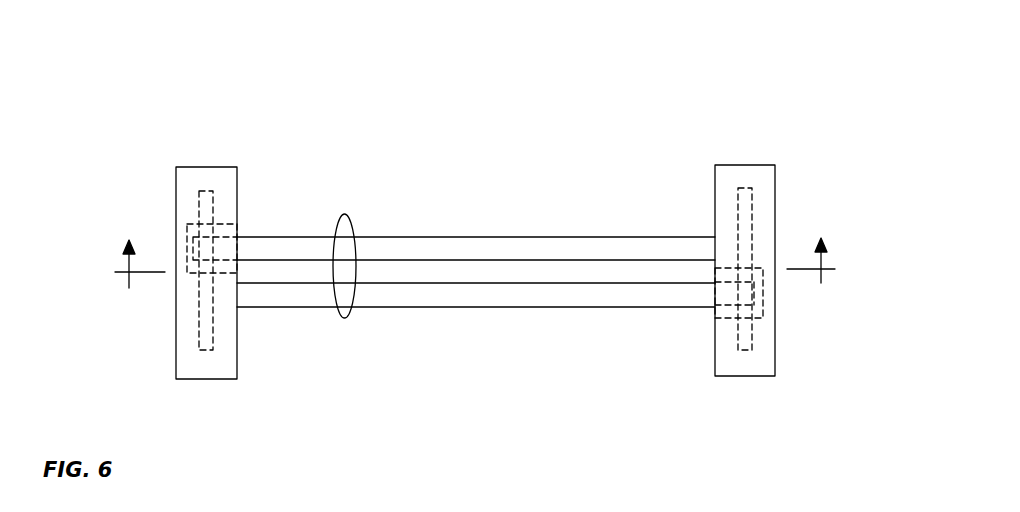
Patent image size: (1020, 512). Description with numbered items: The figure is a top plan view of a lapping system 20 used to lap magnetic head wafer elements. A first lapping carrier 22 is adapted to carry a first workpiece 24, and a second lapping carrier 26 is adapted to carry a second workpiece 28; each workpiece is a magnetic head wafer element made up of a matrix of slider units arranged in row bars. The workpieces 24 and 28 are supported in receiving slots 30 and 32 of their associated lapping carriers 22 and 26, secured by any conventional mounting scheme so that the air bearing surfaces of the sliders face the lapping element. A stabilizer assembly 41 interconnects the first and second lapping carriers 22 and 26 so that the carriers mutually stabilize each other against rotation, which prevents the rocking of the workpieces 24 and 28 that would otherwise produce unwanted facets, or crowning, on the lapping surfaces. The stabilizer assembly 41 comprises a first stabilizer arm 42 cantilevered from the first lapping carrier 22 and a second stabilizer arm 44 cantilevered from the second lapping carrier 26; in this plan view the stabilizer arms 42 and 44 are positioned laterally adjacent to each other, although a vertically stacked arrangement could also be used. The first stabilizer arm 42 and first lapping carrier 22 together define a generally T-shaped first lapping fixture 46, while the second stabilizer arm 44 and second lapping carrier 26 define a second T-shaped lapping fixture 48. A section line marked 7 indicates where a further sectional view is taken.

The lapping system 20 is at (162, 68).
The first lapping carrier 22 is at (177, 207).
The first workpiece 24 is at (208, 318).
The second lapping carrier 26 is at (775, 187).
The second workpiece 28 is at (750, 333).
The receiving slot 30 is at (208, 353).
The receiving slot 32 is at (740, 353).
The stabilizer assembly 41 is at (348, 218).
The first stabilizer arm 42 is at (473, 307).
The second stabilizer arm 44 is at (478, 237).
The first lapping fixture 46 is at (273, 158).
The second lapping fixture 48 is at (678, 383).
The section line 7- 7 is at (476, 270).